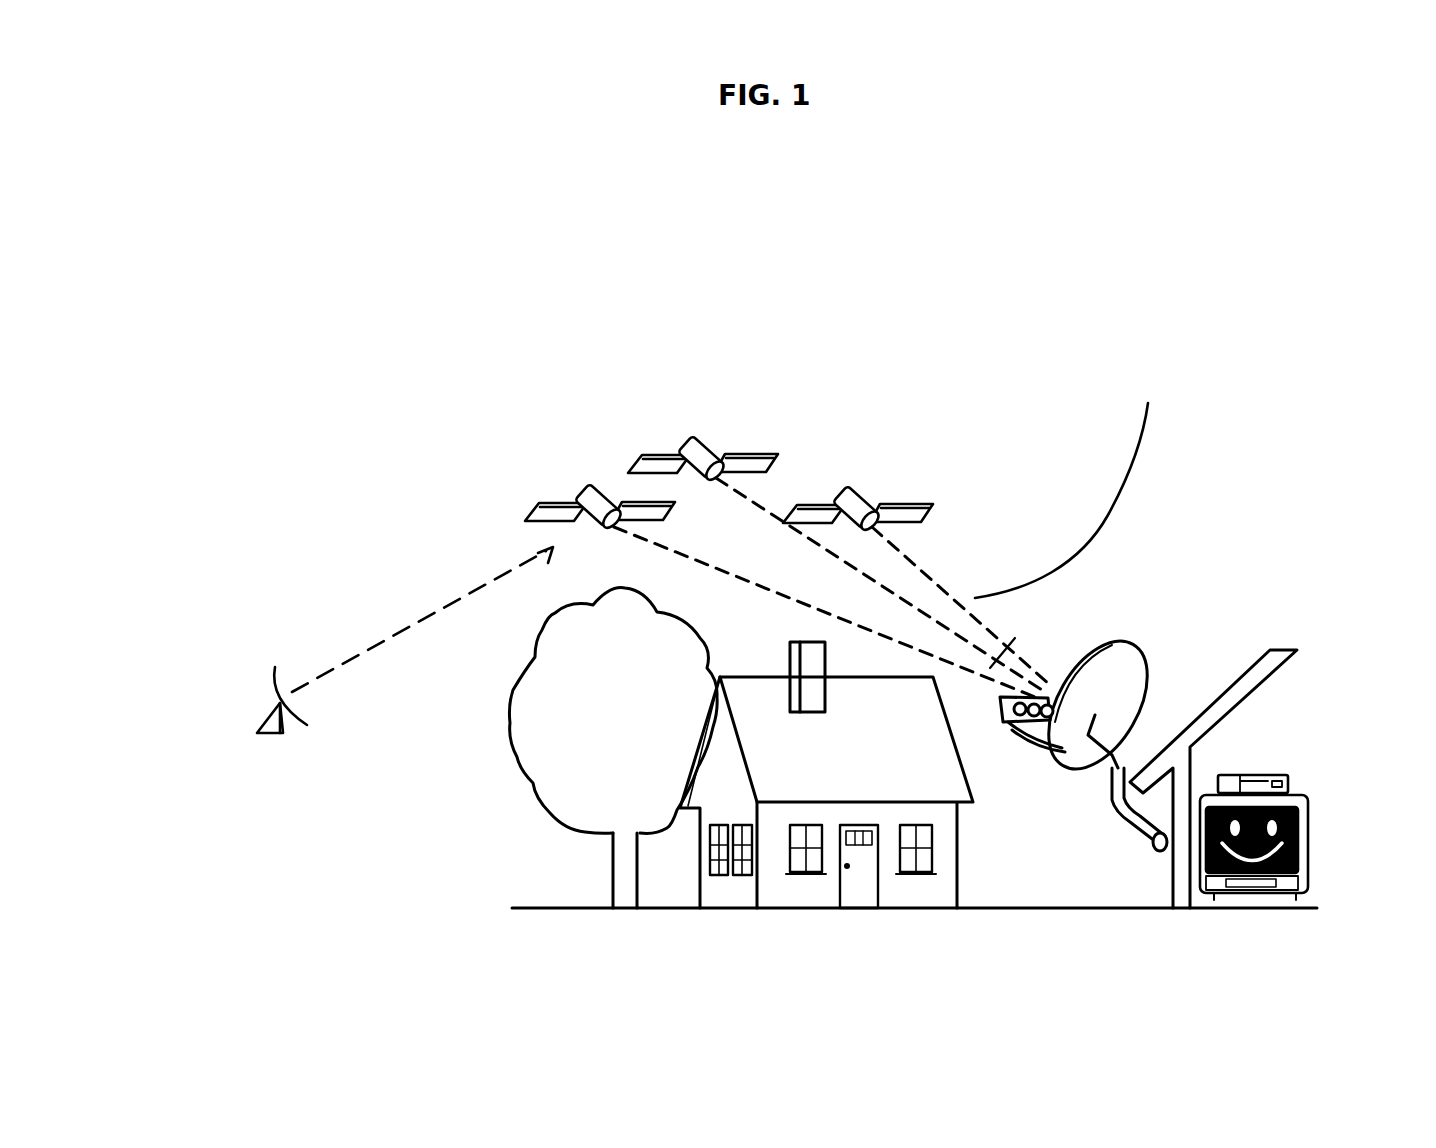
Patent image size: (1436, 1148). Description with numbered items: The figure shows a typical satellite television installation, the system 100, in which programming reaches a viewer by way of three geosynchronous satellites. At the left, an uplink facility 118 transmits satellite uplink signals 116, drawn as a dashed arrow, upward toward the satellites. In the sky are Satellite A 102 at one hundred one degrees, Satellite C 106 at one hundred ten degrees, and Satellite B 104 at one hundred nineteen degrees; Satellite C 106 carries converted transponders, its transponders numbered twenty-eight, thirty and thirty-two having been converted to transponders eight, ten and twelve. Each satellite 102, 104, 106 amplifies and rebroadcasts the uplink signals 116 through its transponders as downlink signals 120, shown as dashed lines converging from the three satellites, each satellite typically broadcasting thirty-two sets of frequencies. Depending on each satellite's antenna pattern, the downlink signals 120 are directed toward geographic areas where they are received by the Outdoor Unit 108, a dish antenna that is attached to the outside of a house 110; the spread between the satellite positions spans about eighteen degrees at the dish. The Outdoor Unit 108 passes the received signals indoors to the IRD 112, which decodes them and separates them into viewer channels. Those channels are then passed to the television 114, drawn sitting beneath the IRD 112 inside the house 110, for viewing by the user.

The system 100 is at (907, 238).
The Satellite A 102 is at (565, 487).
The Satellite B 104 is at (865, 473).
The Satellite C 106 is at (765, 438).
The Outdoor Unit (ODU) 108 is at (1110, 636).
The house 110 is at (1237, 668).
The IRD 112 is at (1253, 772).
The television 114 is at (1308, 832).
The satellite uplink signals 116 is at (370, 633).
The uplink facility 118 is at (263, 705).
The downlink signals 120 is at (893, 529).